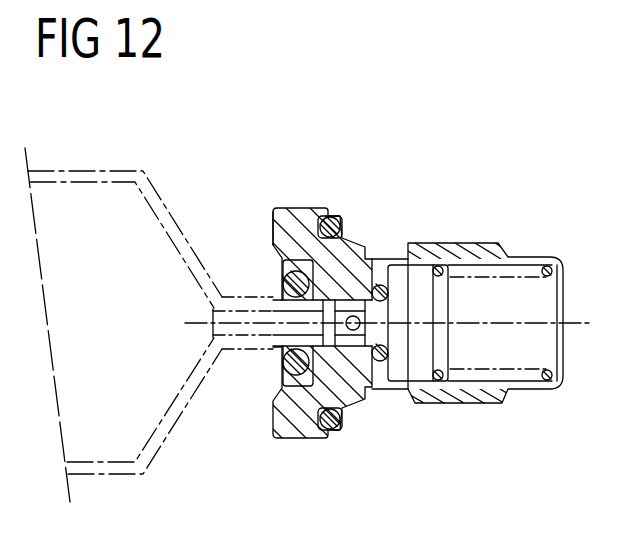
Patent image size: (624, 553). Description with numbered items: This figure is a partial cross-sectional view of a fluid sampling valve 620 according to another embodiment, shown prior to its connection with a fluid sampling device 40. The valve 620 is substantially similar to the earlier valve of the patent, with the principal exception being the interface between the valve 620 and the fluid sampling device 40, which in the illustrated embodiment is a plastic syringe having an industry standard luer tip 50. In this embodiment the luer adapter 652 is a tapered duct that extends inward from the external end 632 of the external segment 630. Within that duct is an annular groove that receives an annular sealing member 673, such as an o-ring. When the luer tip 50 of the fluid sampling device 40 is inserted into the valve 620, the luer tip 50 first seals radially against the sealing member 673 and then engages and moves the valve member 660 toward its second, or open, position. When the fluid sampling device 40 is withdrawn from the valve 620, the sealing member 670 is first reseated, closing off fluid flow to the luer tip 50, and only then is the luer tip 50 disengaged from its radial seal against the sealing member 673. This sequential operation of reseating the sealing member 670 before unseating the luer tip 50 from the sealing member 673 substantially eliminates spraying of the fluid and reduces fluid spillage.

The valve 620 is at (516, 140).
The fluid sampling device 40 is at (150, 176).
The luer tip 50 is at (213, 341).
The external segment 630 is at (332, 453).
The external end 632 is at (275, 273).
The luer adapter 652 is at (252, 362).
The valve member 660 is at (418, 268).
The sealing member 670 is at (382, 362).
The annular sealing member 673 is at (300, 256).